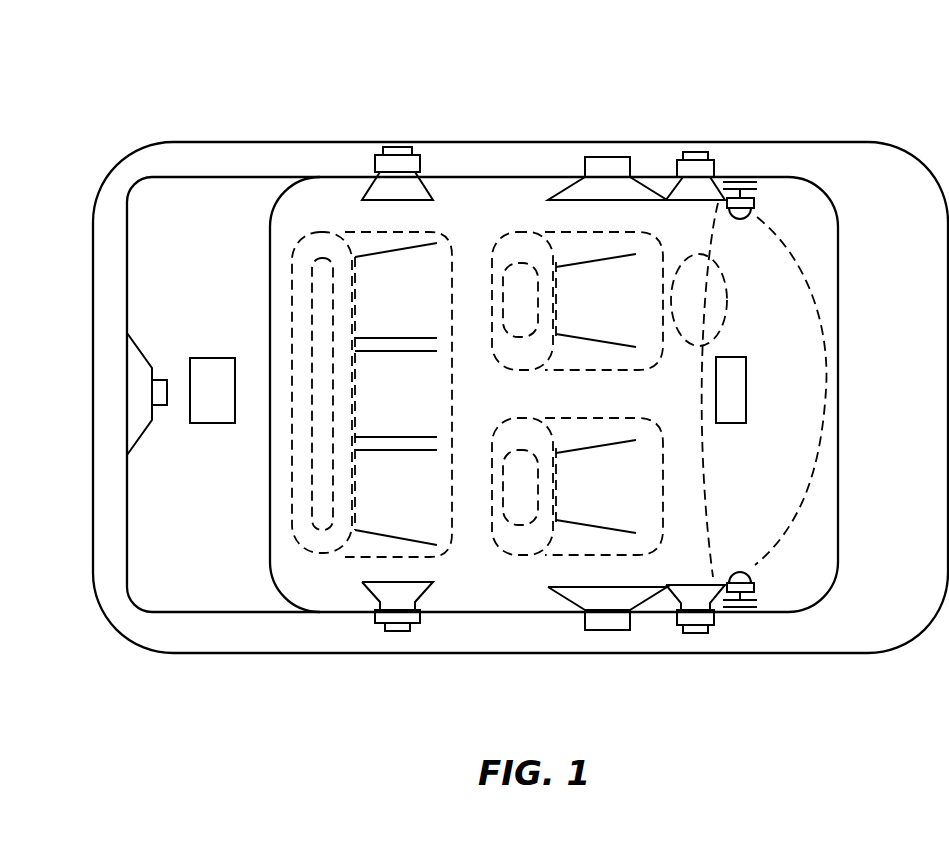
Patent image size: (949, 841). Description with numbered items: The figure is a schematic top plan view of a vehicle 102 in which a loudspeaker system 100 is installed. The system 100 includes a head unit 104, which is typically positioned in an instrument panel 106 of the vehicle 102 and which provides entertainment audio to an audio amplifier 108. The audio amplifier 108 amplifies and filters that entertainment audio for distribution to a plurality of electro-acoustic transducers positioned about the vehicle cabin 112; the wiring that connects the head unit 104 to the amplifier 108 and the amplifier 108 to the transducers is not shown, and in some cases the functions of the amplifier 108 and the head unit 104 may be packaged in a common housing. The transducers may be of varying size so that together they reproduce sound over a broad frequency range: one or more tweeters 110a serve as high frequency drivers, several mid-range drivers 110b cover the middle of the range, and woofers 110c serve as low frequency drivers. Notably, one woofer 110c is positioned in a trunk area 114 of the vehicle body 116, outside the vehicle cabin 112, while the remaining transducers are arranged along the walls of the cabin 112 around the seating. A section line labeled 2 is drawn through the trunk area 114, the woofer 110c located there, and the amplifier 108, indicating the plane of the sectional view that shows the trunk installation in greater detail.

The loudspeaker system 100 is at (116, 102).
The vehicle 102 is at (878, 134).
The head unit 104 is at (746, 395).
The instrument panel 106 is at (798, 510).
The audio amplifier 108 is at (213, 423).
The tweeter 110a is at (742, 181).
The mid-range driver 110b is at (398, 147).
The woofer 110c is at (606, 157).
The vehicle cabin 112 is at (502, 592).
The trunk area 114 is at (168, 578).
The vehicle body 116 is at (228, 654).
The section line 2- 2 is at (268, 393).